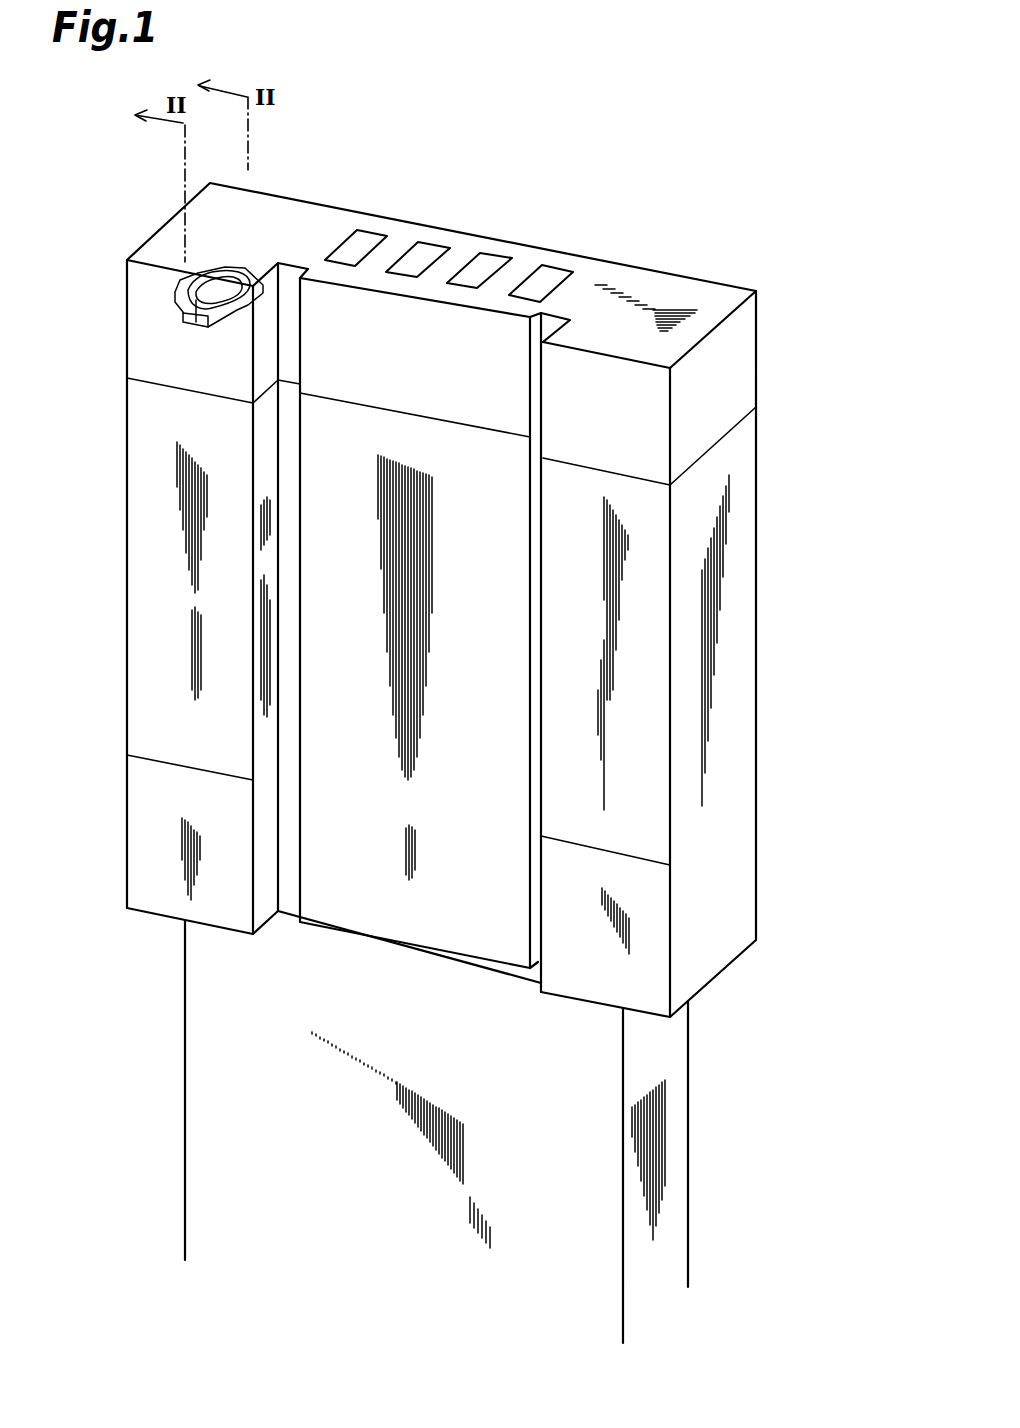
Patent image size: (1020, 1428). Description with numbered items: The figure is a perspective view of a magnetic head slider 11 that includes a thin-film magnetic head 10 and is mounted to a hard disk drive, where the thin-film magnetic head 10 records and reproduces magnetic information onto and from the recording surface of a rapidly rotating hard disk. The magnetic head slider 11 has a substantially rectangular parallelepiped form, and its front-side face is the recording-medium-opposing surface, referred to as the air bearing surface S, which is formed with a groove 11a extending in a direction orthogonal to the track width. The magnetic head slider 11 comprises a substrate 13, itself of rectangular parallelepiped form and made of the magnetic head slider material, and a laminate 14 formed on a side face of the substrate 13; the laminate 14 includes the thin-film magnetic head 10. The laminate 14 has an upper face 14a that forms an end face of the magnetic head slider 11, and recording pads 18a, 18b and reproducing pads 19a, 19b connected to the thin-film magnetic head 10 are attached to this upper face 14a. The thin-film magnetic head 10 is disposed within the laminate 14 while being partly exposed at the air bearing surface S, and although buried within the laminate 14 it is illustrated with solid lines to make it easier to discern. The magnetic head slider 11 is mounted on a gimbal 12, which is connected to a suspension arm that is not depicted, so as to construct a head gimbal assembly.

The thin-film magnetic head 10 is at (172, 238).
The magnetic head slider 11 is at (740, 212).
The groove 11a is at (442, 335).
The gimbal 12 is at (662, 1065).
The substrate 13 is at (733, 673).
The laminate 14 is at (747, 323).
The upper face 14a is at (673, 307).
The recording pad 18a is at (363, 247).
The recording pad 18b is at (547, 285).
The reproducing pad 19a is at (422, 260).
The reproducing pad 19b is at (485, 275).
The air bearing surface S is at (145, 533).